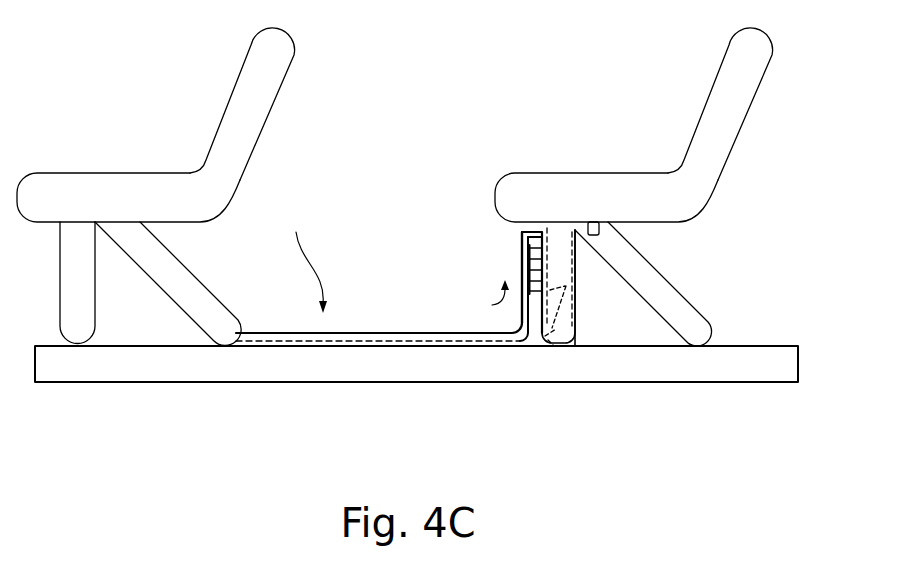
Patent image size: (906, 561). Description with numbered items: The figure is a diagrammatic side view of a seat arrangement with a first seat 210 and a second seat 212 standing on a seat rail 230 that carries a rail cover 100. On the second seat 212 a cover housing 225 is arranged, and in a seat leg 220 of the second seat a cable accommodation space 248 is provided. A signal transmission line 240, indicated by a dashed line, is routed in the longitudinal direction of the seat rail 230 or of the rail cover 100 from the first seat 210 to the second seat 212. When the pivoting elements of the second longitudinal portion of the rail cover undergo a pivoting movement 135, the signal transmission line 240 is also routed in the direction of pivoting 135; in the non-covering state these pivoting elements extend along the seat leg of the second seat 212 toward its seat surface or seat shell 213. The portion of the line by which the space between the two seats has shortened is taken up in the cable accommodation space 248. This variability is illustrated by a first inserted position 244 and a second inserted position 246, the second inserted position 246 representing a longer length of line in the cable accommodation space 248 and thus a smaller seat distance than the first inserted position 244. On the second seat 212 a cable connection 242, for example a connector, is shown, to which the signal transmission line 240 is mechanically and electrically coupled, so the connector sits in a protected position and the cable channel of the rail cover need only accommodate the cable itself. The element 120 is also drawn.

The rail cover 100 is at (303, 259).
The locking mechanism / zipper-like fastener 120 is at (520, 274).
The pivoting movement 135 is at (492, 304).
The first seat 210 is at (108, 172).
The second seat 212 is at (643, 172).
The seat shell 213 is at (552, 195).
The seat leg 220 is at (683, 296).
The cover housing 225 is at (521, 247).
The seat rail 230 is at (713, 363).
The signal transmission line 240 is at (362, 341).
The cable connection 242 is at (599, 237).
The first inserted position 244 is at (580, 344).
The second inserted position 246 is at (553, 345).
The cable accommodation space 248 is at (557, 343).